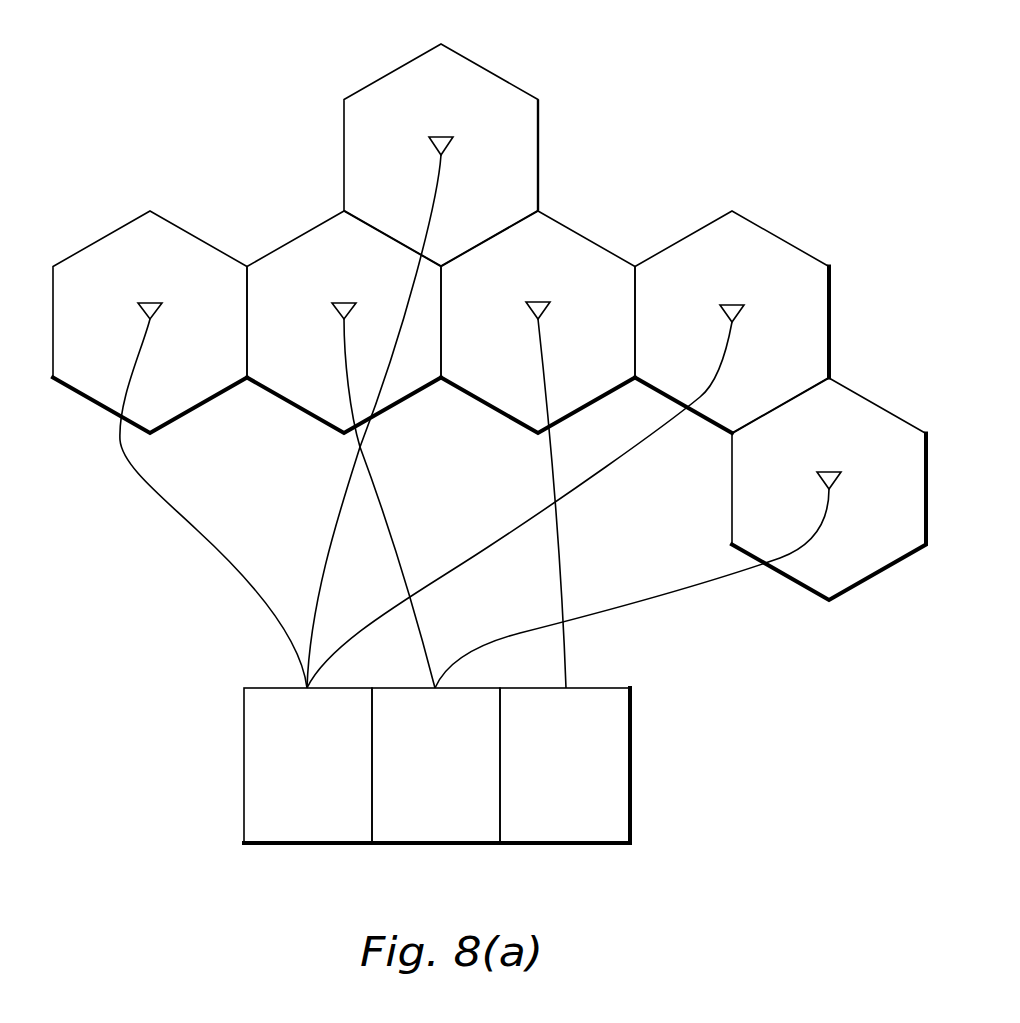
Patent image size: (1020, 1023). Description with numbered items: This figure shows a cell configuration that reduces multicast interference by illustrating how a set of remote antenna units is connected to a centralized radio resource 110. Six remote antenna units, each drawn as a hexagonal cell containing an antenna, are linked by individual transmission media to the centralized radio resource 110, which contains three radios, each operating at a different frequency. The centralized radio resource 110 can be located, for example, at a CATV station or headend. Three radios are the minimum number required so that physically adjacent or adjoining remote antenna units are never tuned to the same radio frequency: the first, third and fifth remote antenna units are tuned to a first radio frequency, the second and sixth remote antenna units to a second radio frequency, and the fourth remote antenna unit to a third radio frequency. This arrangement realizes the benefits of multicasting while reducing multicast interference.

The centralized radio resource 110 is at (504, 793).